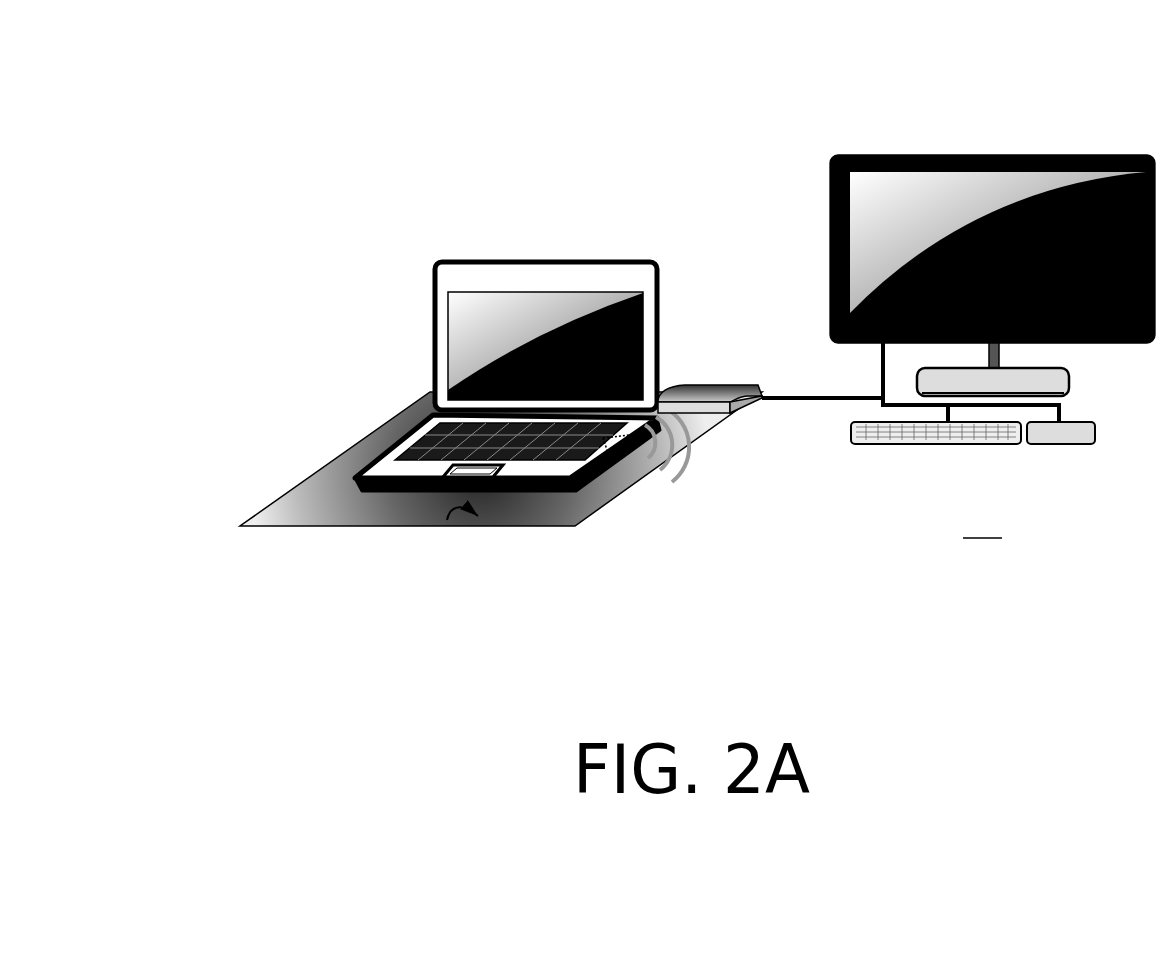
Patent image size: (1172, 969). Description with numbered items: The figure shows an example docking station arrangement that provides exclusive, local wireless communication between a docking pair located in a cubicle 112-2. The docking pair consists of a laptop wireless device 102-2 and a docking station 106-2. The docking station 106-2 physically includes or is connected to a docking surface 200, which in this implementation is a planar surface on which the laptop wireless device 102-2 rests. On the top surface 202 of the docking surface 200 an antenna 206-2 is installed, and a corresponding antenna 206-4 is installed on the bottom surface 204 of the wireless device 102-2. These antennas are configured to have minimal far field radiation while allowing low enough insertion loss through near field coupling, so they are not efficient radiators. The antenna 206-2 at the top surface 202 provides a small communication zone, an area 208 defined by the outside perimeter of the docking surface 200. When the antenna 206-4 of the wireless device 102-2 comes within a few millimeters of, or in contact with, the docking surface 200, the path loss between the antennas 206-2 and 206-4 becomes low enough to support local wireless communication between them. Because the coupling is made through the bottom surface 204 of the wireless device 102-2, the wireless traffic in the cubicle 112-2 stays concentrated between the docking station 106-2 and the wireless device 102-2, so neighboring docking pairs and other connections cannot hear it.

The cubicle 112-2 is at (627, 75).
The laptop wireless device 102-2 is at (436, 352).
The docking station 106-2 is at (715, 372).
The docking surface 200 is at (262, 508).
The top surface 202 is at (447, 520).
The bottom surface 204 is at (590, 493).
The antenna 206-2 is at (618, 445).
The antenna 206-4 is at (658, 437).
The area 208 is at (327, 460).